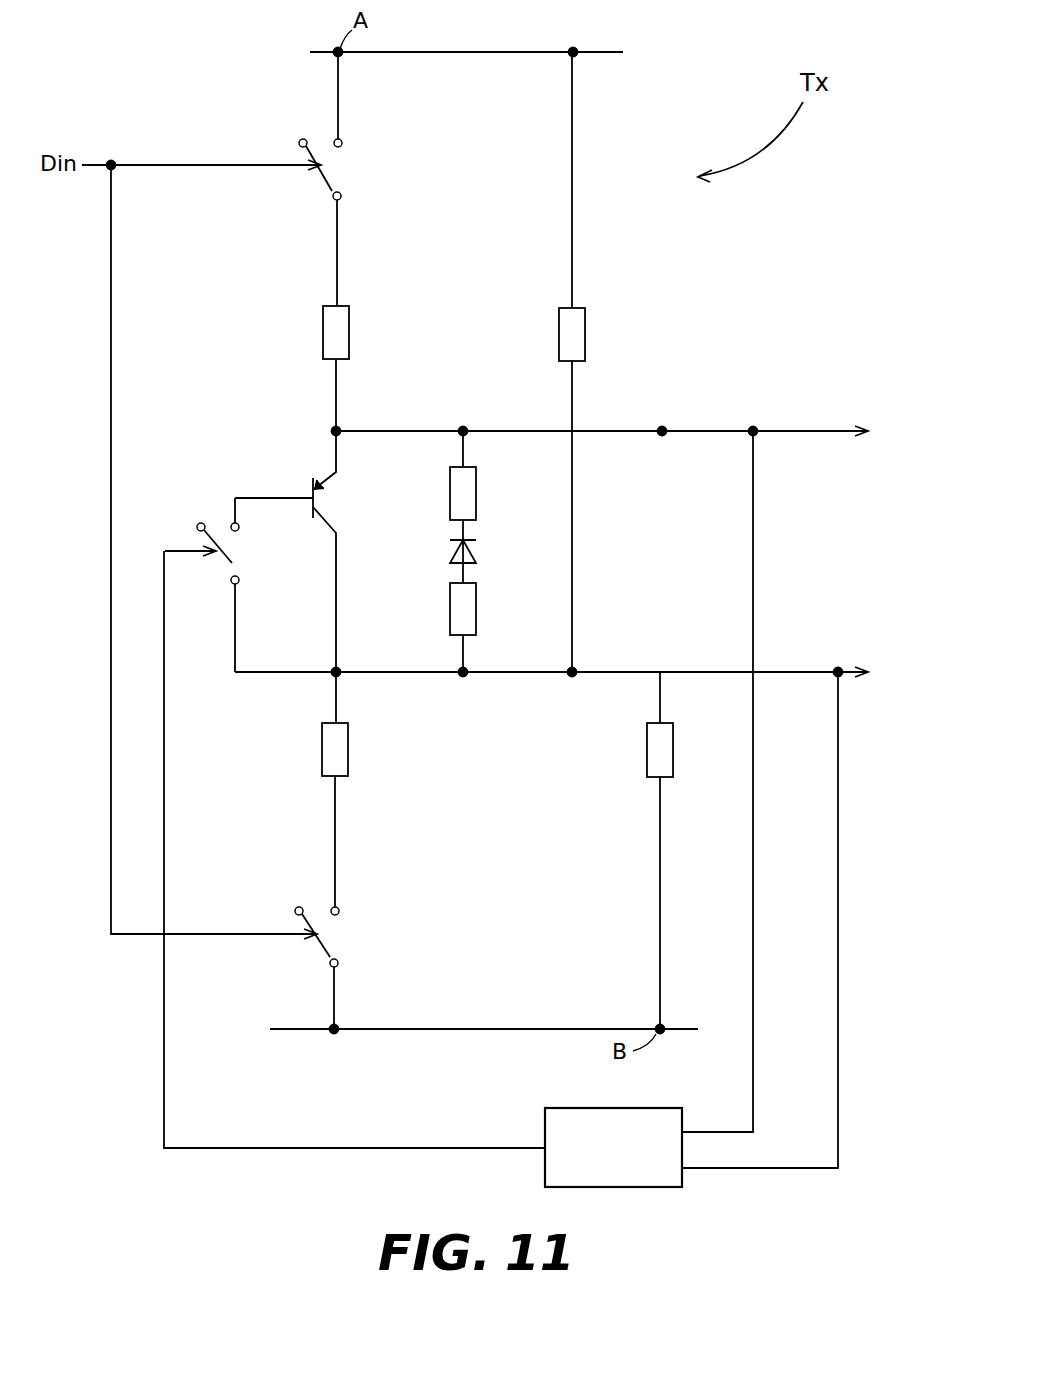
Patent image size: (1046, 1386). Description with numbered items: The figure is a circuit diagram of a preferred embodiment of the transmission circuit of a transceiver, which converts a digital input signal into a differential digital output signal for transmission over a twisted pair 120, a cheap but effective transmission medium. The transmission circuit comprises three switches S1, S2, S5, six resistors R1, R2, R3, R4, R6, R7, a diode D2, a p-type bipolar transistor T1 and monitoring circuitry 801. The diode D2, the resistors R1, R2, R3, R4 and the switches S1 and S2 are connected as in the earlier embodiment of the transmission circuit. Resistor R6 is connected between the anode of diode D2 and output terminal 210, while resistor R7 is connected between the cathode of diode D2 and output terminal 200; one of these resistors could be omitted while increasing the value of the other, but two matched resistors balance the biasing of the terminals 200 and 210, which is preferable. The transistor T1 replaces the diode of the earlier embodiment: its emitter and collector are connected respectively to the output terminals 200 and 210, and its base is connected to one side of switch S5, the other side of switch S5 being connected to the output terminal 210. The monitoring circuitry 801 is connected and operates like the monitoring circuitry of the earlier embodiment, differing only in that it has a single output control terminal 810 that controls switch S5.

The output terminal 200 is at (668, 428).
The output terminal 210 is at (834, 676).
The twisted pair 120 is at (786, 532).
The output control terminal 810 is at (433, 1146).
The monitoring circuitry 801 is at (683, 1188).
The switch S1 is at (325, 190).
The switch S2 is at (326, 941).
The switch S5 is at (228, 557).
The resistor R1 is at (350, 339).
The resistor R2 is at (349, 758).
The resistor R3 is at (586, 341).
The resistor R4 is at (675, 758).
The resistor R6 is at (477, 621).
The resistor R7 is at (477, 501).
The p-type bipolar transistor T1 is at (322, 512).
The diode D2 is at (450, 553).